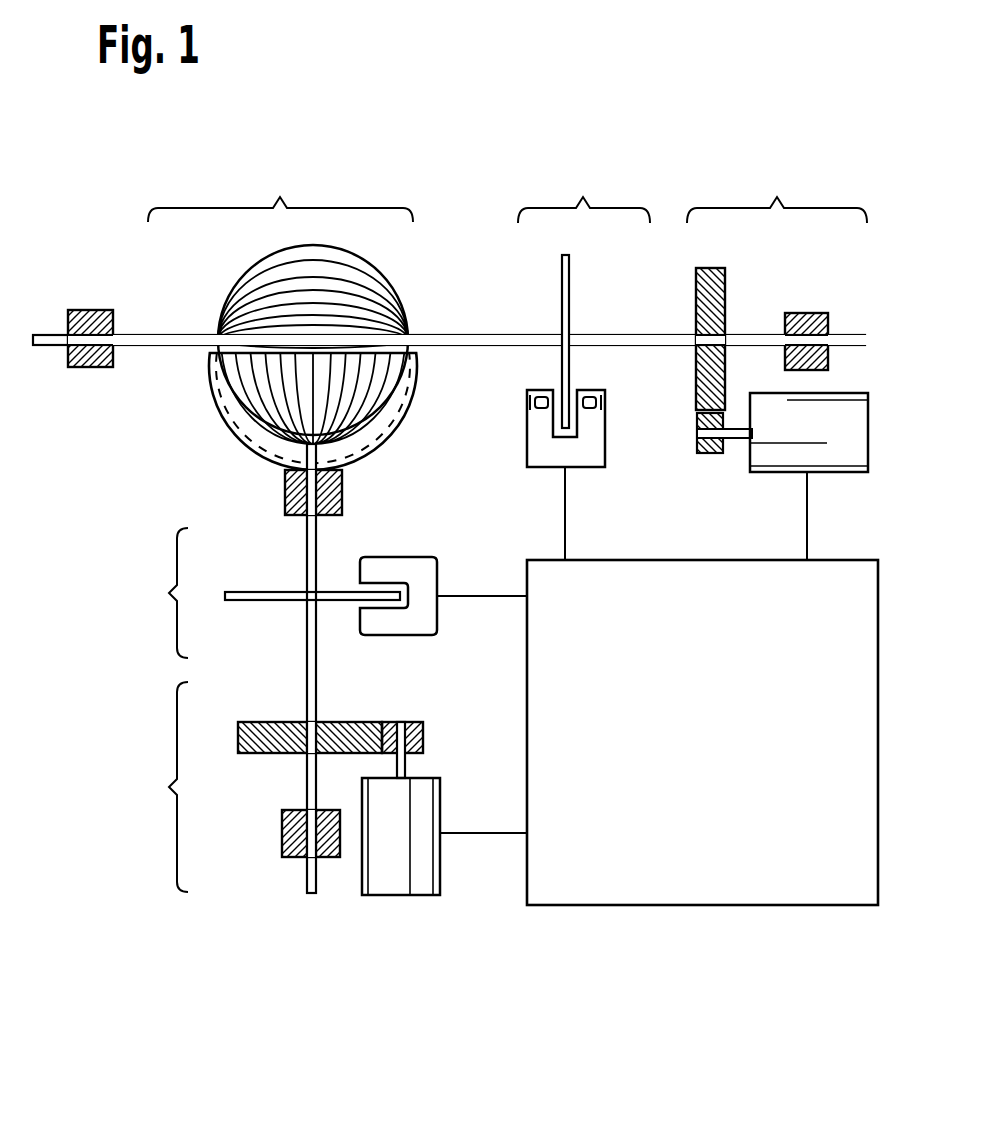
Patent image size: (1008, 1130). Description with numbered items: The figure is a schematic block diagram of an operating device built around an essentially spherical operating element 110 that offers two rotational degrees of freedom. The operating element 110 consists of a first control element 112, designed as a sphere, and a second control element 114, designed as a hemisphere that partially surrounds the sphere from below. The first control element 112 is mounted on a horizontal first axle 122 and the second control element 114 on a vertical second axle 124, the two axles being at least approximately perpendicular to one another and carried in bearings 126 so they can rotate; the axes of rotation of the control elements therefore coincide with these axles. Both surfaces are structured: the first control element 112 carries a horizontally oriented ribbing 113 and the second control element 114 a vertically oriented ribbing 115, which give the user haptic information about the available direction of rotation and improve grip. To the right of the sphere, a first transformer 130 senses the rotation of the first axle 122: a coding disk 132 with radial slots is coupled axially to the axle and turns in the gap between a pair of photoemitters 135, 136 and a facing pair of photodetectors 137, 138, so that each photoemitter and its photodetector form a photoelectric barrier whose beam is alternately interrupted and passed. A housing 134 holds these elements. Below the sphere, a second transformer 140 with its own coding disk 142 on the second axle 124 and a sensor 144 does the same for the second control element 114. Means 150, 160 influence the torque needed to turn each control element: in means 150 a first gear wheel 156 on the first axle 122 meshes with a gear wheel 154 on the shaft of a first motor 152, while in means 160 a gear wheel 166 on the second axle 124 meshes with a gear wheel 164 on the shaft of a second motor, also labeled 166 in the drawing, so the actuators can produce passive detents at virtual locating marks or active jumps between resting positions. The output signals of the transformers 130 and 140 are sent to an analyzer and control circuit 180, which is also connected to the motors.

The operating element 110 is at (277, 312).
The first control element 112 is at (226, 322).
The ribbing 113 is at (255, 303).
The second control element 114 is at (218, 385).
The ribbing 115 is at (253, 393).
The first axle 122 is at (458, 335).
The second axle 124 is at (314, 540).
The bearings 126 is at (88, 369).
The first transformer 130 is at (565, 358).
The coding disk 132 is at (569, 268).
The sensor housing 134 is at (580, 458).
The first photoemitter 135 is at (591, 396).
The second photoemitter 136 is at (603, 408).
The first photodetector 137 is at (540, 396).
The second photodetector 138 is at (531, 408).
The second transformer 140 is at (318, 593).
The coding disk 142 is at (255, 592).
The sensor 144 is at (430, 586).
The means for influencing torque 150 is at (779, 358).
The first motor 152 is at (838, 452).
The gear wheel 154 is at (722, 458).
The first gear wheel 156 is at (716, 290).
The means for influencing torque 160 is at (317, 778).
The gear wheel 164 is at (421, 740).
The gear wheel 166 is at (276, 735).
The analyzer and control circuit 180 is at (712, 875).